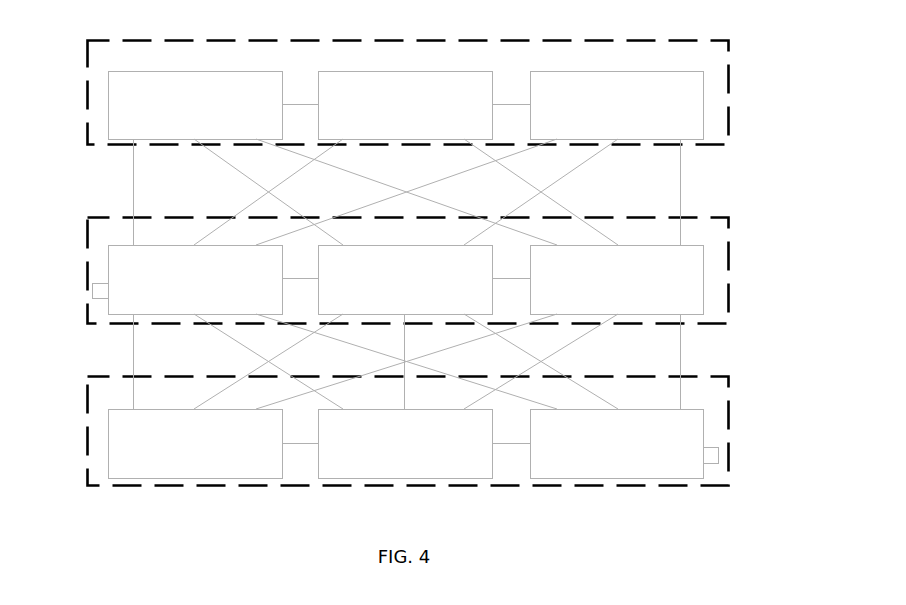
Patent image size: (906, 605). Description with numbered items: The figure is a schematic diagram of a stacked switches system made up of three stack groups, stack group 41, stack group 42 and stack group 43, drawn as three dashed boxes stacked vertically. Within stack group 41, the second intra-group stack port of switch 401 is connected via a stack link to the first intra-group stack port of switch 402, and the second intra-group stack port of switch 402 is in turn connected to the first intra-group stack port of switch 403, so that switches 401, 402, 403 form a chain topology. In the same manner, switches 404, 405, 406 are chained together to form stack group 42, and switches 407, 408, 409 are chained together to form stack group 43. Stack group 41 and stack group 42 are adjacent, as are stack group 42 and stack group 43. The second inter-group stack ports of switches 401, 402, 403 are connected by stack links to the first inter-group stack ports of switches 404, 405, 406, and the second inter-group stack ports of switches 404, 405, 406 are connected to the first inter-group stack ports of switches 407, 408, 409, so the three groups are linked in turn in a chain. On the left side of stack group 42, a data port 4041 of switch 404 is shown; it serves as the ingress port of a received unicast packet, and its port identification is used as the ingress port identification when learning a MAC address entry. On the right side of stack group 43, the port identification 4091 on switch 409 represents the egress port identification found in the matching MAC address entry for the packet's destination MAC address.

The stack group 41 is at (115, 38).
The stack group 42 is at (116, 216).
The stack group 43 is at (113, 375).
The switch 401 is at (196, 107).
The switch 402 is at (406, 107).
The switch 403 is at (617, 107).
The switch 404 is at (196, 281).
The switch 405 is at (406, 281).
The switch 406 is at (617, 281).
The switch 407 is at (196, 444).
The switch 408 is at (406, 444).
The switch 409 is at (617, 444).
The data port 4041 is at (97, 282).
The port identification 4091 is at (718, 457).